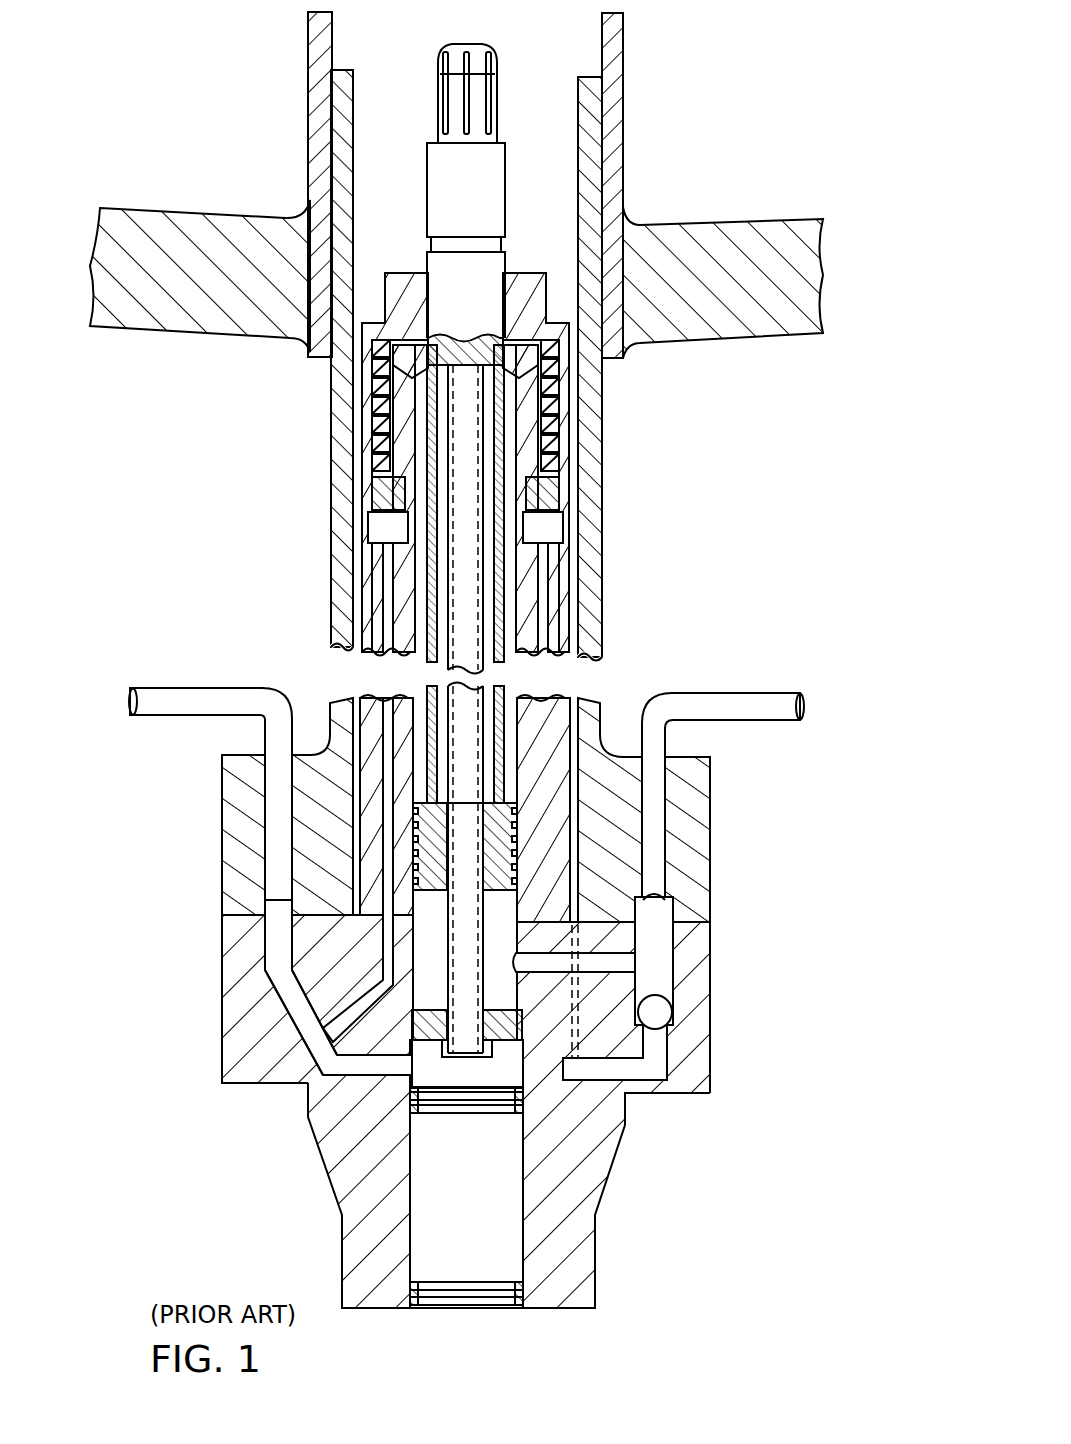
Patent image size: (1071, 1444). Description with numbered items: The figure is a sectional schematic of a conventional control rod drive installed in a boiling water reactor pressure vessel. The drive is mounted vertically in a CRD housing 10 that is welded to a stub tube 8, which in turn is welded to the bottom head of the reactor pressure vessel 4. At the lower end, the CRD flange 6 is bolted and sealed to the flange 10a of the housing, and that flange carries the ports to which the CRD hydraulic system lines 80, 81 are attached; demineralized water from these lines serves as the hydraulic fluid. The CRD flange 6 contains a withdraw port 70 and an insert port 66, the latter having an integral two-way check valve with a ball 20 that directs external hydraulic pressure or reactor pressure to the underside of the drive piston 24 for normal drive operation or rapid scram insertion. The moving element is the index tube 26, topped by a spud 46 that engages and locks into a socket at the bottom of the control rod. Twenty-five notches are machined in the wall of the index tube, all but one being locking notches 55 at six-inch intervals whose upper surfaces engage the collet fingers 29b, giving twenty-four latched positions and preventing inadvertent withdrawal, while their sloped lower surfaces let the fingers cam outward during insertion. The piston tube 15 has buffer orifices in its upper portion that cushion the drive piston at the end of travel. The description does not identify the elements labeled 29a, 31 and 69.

The reactor pressure vessel 4 is at (225, 218).
The CRD flange 6 is at (598, 1247).
The stub tube 8 is at (615, 125).
The CRD housing 10 is at (340, 600).
The flange of the CRD housing 10a is at (703, 885).
The piston tube 15 is at (483, 582).
The ball 20 is at (672, 1003).
The drive piston 24 is at (517, 858).
The index tube 26 is at (505, 627).
The upper packing ring 29a is at (553, 378).
The collet fingers 29b is at (375, 503).
The packing stack 31 is at (373, 442).
The spud 46 is at (502, 55).
The locking notches 55 is at (520, 703).
The insert port 66 is at (660, 912).
The horizontal passage 69 is at (327, 1060).
The withdraw port 70 is at (277, 935).
The CRD hydraulic system line 80 is at (747, 693).
The CRD hydraulic system line 81 is at (170, 688).